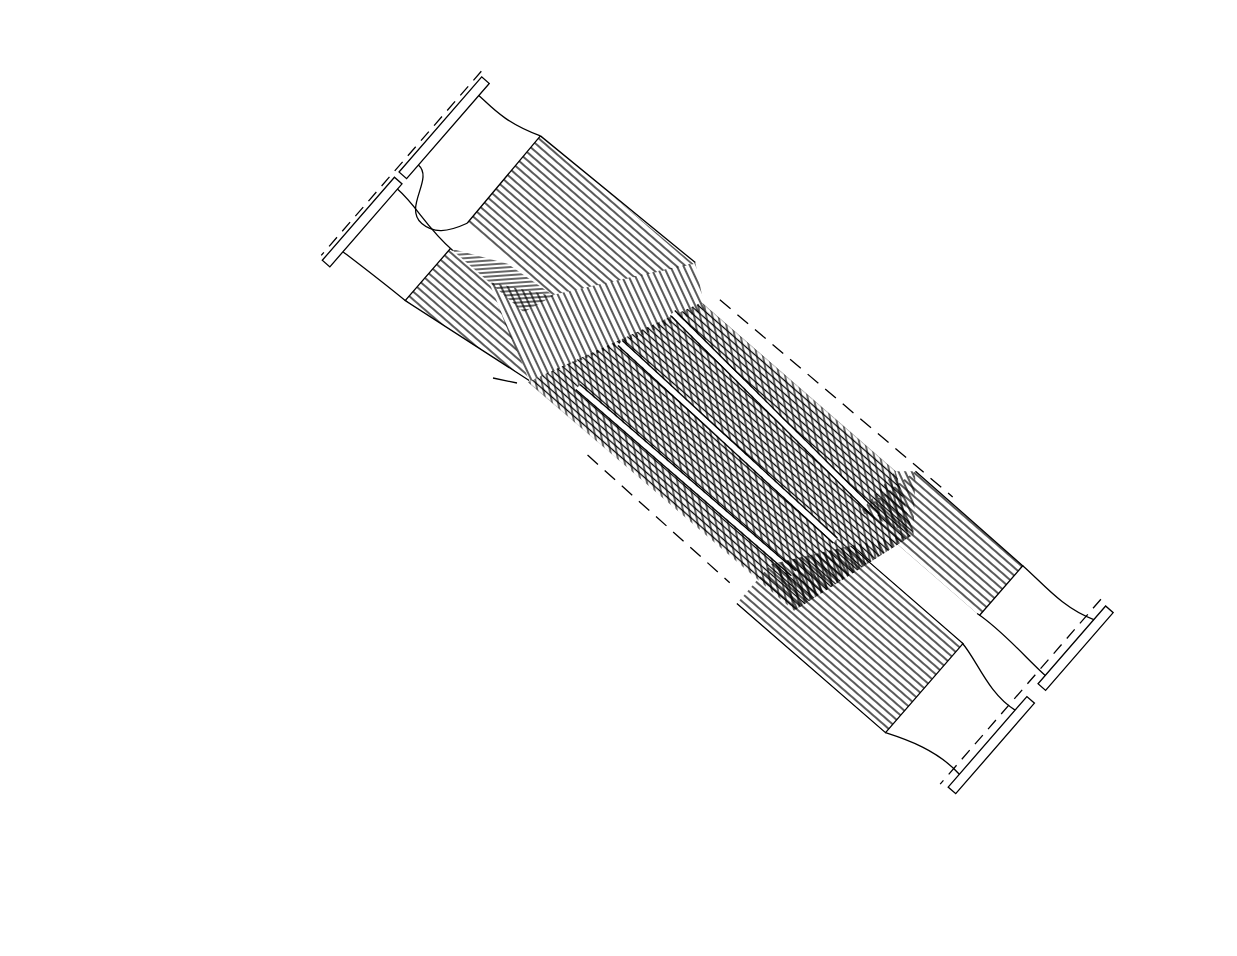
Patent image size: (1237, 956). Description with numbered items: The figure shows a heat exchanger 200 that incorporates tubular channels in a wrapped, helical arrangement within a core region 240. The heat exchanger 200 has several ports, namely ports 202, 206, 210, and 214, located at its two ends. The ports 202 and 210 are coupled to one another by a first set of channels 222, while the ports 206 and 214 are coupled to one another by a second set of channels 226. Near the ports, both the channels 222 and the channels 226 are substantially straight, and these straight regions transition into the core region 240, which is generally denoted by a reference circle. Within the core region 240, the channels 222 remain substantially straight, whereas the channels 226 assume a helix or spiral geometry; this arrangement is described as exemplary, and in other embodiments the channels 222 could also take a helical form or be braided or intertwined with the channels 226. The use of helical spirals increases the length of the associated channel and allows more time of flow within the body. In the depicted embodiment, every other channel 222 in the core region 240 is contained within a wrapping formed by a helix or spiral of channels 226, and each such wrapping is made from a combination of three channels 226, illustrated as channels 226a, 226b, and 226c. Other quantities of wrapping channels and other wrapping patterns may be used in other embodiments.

The heat exchanger 200 is at (975, 311).
The port 202 is at (352, 219).
The port 206 is at (445, 127).
The port 210 is at (1098, 658).
The port 214 is at (1004, 738).
The first set of channels 222 is at (446, 325).
The second set of channels 226 is at (847, 684).
The channel 226a is at (648, 281).
The channel 226b is at (690, 300).
The channel 226c is at (700, 307).
The core region 240 is at (826, 377).